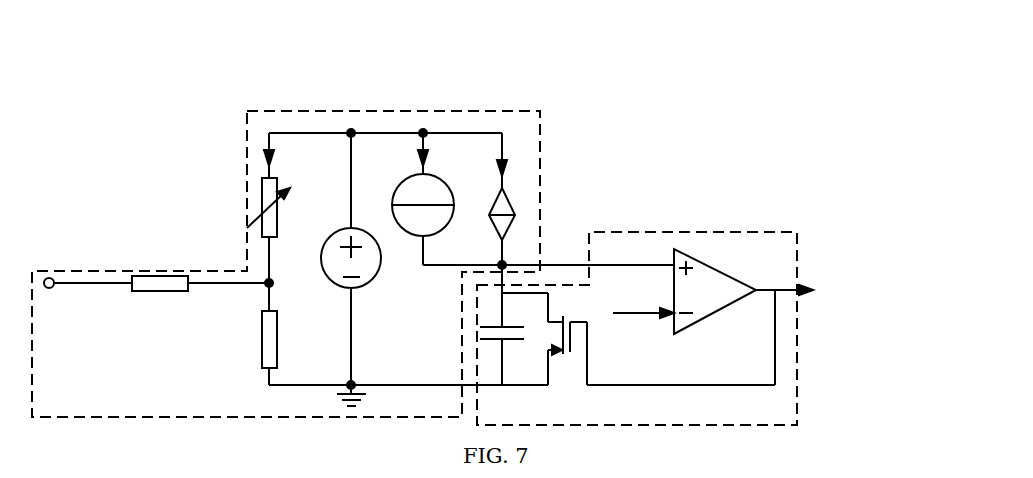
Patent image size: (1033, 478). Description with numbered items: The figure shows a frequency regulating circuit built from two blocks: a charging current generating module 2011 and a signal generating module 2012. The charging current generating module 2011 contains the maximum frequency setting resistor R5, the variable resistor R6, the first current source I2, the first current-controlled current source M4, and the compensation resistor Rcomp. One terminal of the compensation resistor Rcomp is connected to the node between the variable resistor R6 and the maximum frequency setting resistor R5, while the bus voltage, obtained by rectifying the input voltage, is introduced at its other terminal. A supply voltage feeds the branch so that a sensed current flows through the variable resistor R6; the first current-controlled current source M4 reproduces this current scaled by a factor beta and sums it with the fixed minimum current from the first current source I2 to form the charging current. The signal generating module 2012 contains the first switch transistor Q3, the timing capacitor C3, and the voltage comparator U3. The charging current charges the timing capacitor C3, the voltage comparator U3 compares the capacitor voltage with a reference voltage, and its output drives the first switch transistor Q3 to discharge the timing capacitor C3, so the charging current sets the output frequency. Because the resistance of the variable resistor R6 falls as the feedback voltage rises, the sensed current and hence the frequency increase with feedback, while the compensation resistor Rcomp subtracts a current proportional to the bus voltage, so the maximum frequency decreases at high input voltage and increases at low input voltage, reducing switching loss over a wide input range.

The charging current generating module 2011 is at (540, 128).
The signal generating module 2012 is at (797, 248).
The variable resistor R6 is at (282, 207).
The maximum frequency setting resistor R5 is at (247, 339).
The compensation resistor Rcomp is at (163, 306).
The first current source I2 is at (429, 194).
The first current-controlled current source M4 is at (534, 214).
The timing capacitor C3 is at (485, 337).
The first switch transistor Q3 is at (567, 320).
The voltage comparator U3 is at (715, 285).